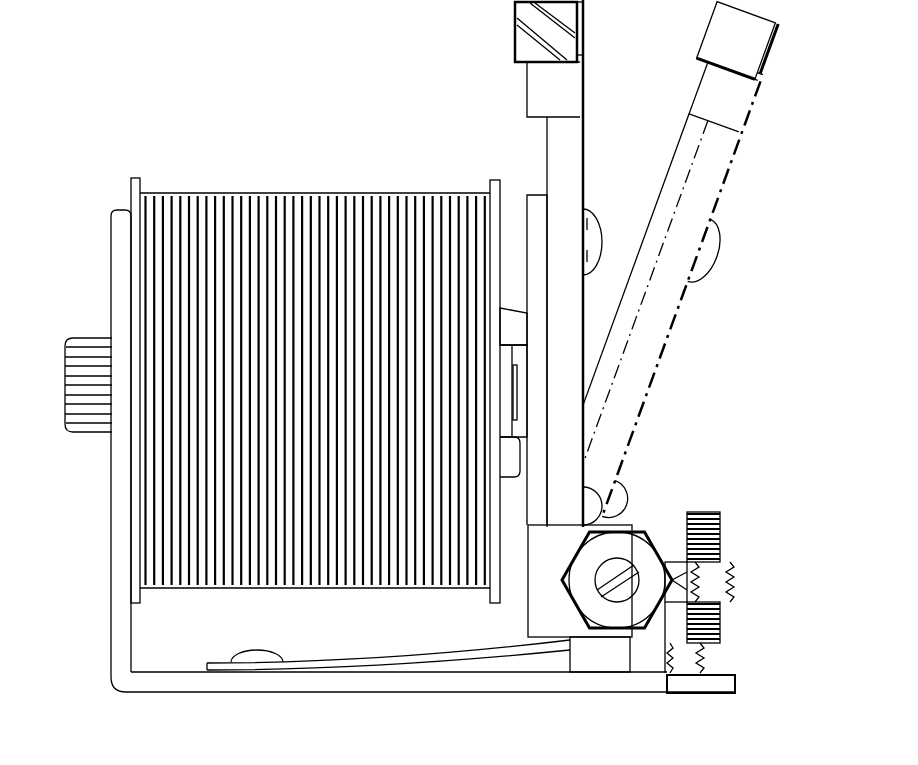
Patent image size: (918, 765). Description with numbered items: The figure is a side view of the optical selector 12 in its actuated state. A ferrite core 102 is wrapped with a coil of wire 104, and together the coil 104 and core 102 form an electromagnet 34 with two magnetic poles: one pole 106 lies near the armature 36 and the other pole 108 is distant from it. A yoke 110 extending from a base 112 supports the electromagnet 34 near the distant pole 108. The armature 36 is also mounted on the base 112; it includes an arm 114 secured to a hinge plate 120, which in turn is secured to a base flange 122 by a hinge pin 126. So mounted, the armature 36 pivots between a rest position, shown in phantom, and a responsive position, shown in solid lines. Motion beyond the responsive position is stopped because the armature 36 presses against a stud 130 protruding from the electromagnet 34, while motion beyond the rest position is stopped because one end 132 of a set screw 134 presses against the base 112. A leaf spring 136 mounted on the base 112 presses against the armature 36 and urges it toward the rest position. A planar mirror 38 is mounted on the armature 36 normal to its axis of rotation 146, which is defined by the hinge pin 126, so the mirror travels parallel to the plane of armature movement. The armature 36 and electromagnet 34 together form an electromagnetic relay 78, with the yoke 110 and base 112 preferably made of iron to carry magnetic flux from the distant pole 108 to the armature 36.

The optical selector 12 is at (141, 110).
The electromagnet 34 is at (303, 323).
The armature 36 is at (583, 45).
The planar mirror 38 is at (515, 35).
The electromagnetic relay 78 is at (104, 672).
The ferrite core 102 is at (80, 423).
The coil of wire 104 is at (243, 590).
The magnetic pole 106 is at (500, 350).
The magnetic pole 108 is at (137, 343).
The yoke 110 is at (120, 580).
The base 112 is at (205, 684).
The arm 114 is at (573, 168).
The hinge plate 120 is at (542, 621).
The base flange 122 is at (652, 673).
The hinge pin 126 is at (618, 618).
The stud 130 is at (560, 312).
The end of set screw 132 is at (733, 650).
The set screw 134 is at (720, 528).
The leaf spring 136 is at (432, 658).
The axis of rotation 146 is at (618, 575).